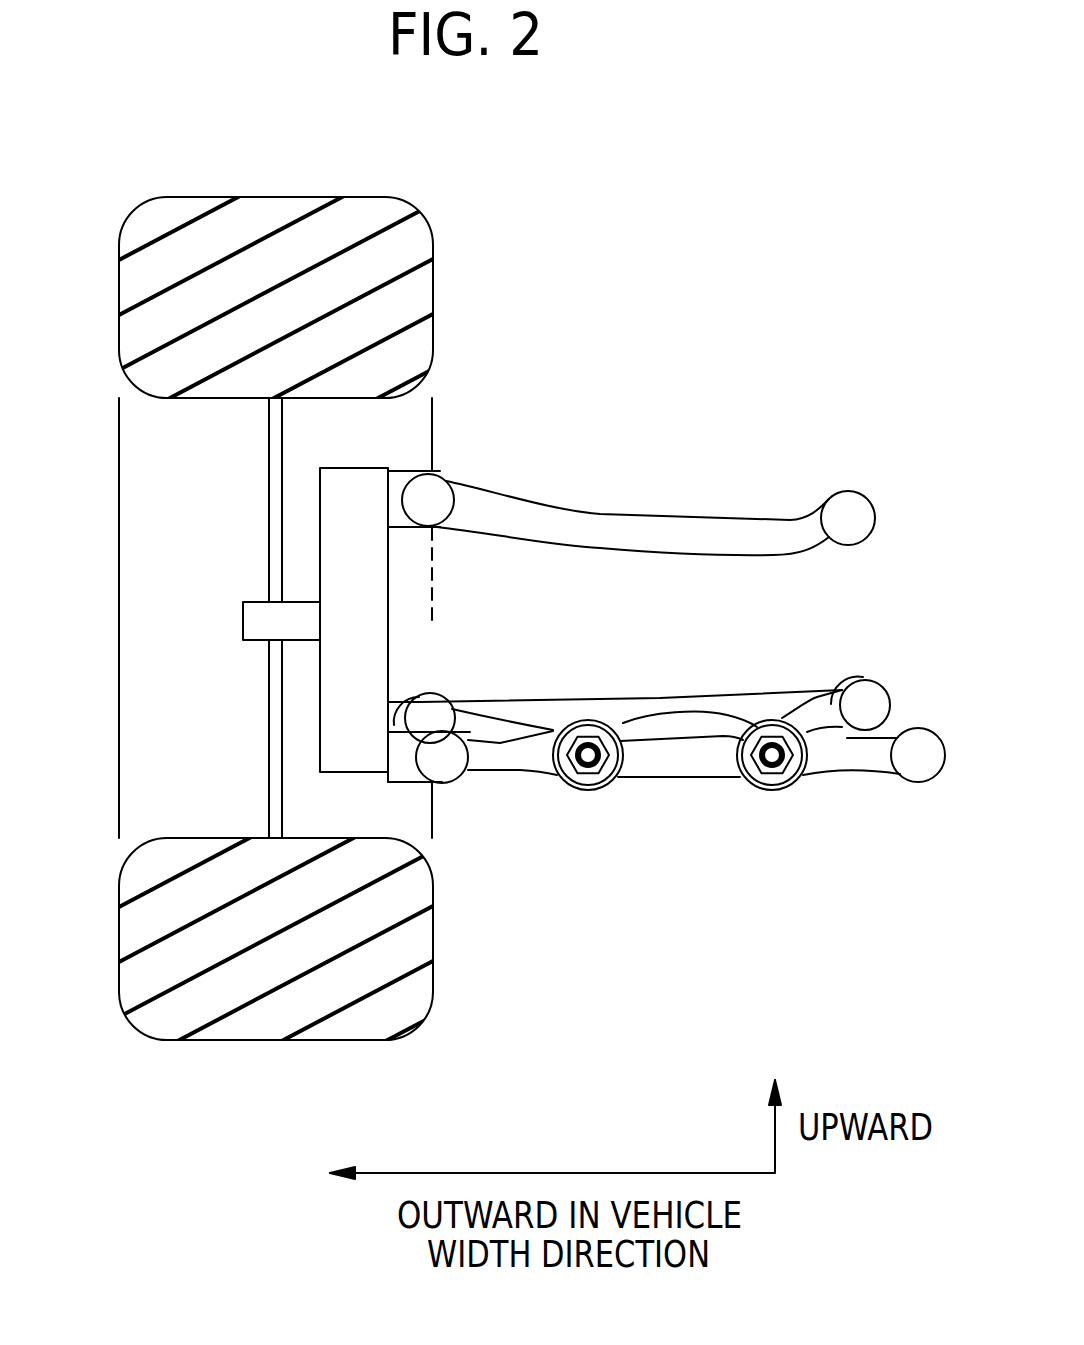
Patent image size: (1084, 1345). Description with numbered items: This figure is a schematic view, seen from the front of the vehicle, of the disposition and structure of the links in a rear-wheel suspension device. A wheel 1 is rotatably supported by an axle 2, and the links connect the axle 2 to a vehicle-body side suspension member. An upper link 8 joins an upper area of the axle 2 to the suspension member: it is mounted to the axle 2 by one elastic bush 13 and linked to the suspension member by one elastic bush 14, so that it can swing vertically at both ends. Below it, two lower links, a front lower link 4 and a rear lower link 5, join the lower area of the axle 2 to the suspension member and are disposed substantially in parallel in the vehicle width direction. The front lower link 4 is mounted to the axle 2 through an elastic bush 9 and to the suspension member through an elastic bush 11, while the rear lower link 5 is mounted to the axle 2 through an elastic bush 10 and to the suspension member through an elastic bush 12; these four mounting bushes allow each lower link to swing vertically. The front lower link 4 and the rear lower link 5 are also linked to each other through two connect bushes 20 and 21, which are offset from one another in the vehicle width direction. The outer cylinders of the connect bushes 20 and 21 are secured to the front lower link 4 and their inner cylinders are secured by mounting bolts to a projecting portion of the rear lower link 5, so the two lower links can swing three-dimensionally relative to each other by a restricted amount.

The wheel 1 is at (143, 312).
The axle 2 is at (337, 542).
The front lower link 4 is at (682, 758).
The rear lower link 5 is at (665, 702).
The upper link 8 is at (642, 533).
The elastic bush 9 is at (445, 768).
The elastic bush 10 is at (432, 720).
The elastic bush 11 is at (918, 765).
The elastic bush 12 is at (867, 700).
The elastic bush 13 is at (430, 490).
The elastic bush 14 is at (850, 510).
The connect bush 20 is at (770, 780).
The connect bush 21 is at (587, 780).